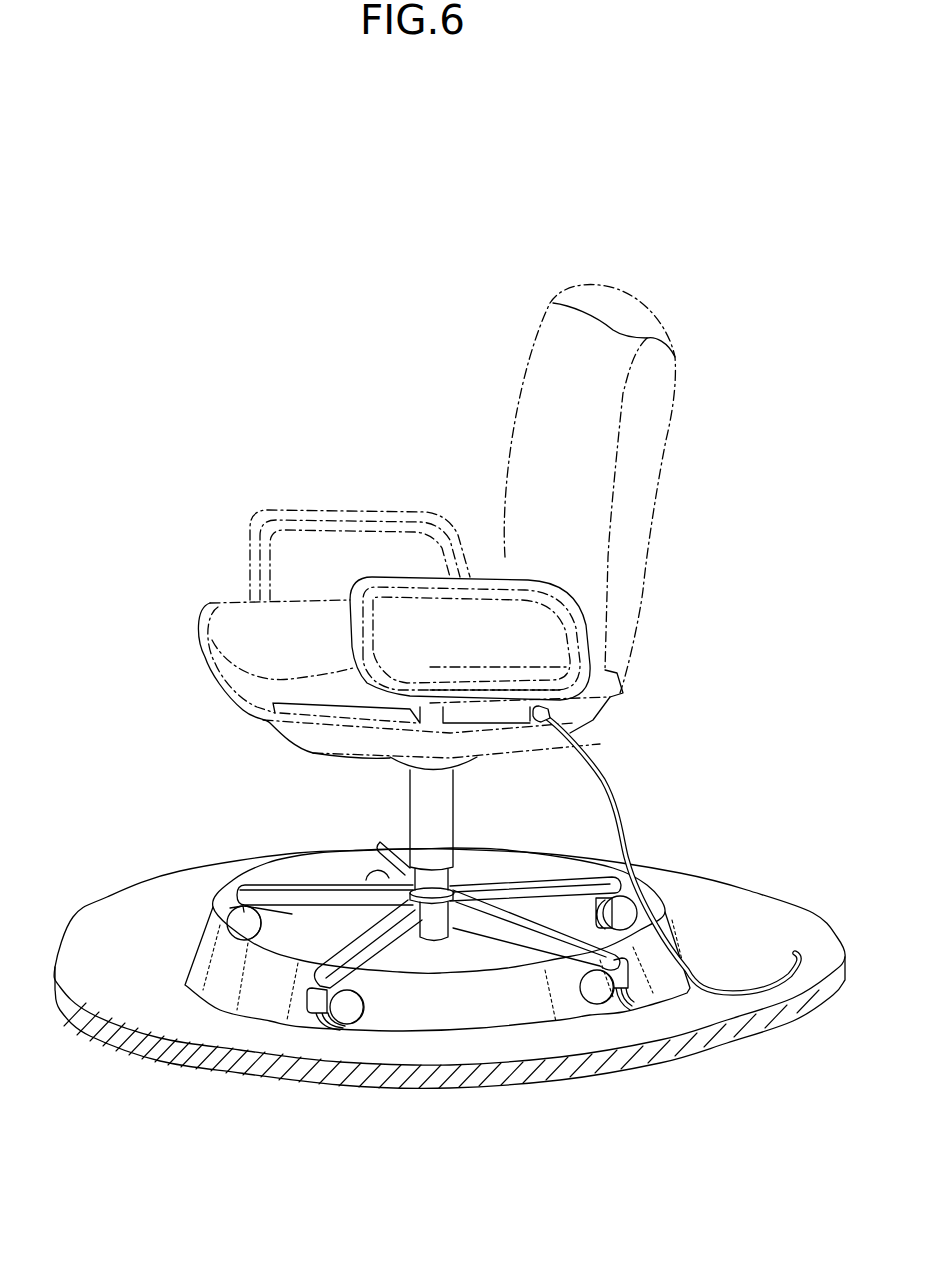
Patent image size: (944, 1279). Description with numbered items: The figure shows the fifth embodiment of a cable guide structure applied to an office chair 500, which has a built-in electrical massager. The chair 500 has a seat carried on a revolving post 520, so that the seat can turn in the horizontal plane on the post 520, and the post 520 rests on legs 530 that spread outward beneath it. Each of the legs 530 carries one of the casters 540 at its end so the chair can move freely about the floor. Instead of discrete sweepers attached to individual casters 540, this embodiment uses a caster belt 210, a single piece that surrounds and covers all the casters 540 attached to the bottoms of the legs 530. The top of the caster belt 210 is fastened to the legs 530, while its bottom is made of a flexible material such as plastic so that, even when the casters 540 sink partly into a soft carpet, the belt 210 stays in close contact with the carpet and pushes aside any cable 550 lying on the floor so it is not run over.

The office chair 500 is at (745, 337).
The revolving post 520 is at (428, 795).
The legs 530 is at (282, 892).
The casters 540 is at (593, 1000).
The cable 550 is at (627, 810).
The caster belt 210 is at (458, 995).